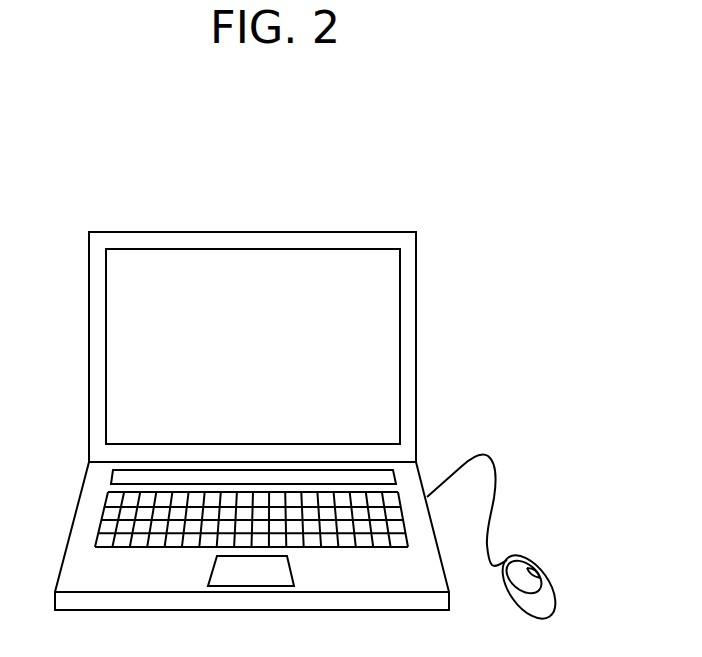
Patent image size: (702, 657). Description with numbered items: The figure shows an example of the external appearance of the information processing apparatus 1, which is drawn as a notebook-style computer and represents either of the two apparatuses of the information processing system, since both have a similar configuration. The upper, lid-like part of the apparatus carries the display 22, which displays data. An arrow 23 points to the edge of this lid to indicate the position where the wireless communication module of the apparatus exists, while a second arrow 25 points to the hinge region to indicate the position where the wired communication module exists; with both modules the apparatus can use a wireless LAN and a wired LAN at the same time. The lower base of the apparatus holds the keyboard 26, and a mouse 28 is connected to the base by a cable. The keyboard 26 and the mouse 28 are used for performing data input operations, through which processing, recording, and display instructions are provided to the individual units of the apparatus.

The information processing apparatus 1 is at (55, 143).
The display 22 is at (165, 263).
The arrow 23 is at (414, 273).
The arrow 25 is at (418, 473).
The keyboard 26 is at (110, 504).
The mouse 28 is at (556, 590).